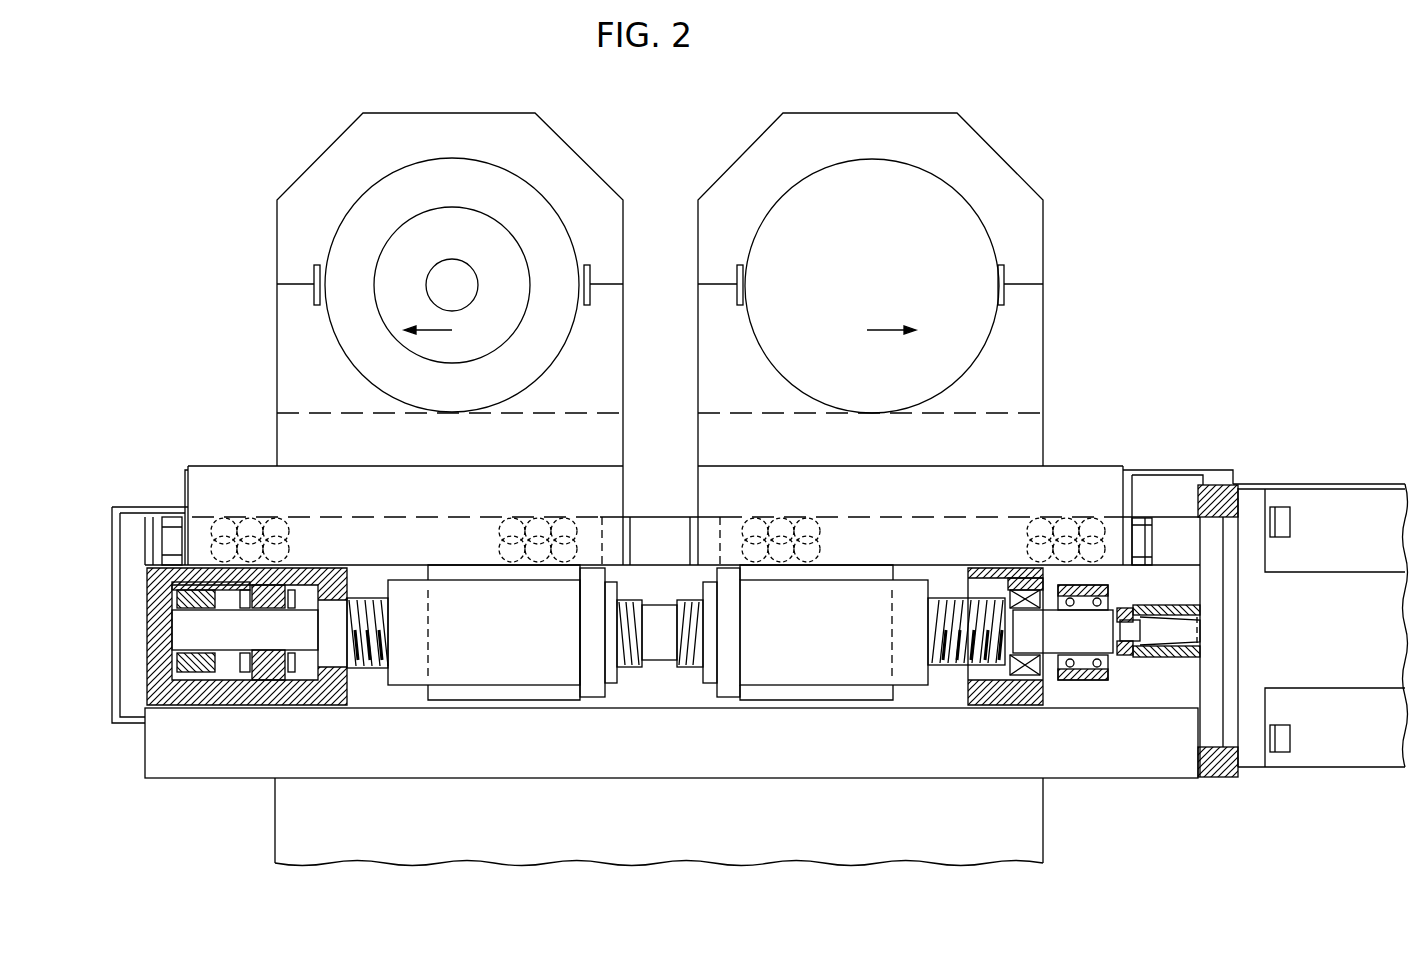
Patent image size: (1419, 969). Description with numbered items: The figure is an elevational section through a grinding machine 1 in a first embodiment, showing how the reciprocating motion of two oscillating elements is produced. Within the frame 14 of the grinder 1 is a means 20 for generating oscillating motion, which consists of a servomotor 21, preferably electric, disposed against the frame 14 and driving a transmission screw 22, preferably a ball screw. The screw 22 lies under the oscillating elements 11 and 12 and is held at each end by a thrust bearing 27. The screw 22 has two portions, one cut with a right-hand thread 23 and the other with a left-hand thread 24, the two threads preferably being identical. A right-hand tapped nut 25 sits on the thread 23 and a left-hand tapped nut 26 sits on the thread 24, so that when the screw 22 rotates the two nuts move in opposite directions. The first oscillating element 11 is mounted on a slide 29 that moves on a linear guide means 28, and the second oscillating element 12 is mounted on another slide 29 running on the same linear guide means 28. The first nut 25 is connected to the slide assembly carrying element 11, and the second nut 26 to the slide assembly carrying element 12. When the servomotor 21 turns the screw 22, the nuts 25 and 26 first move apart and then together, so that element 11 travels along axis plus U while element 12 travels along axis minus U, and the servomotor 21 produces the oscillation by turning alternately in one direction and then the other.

The grinding machine 1 is at (1015, 810).
The first oscillating element 11 is at (854, 148).
The second oscillating element 12 is at (431, 148).
The frame 14 is at (325, 822).
The means for generating oscillating motion 20 is at (1205, 688).
The servomotor 21 is at (1326, 643).
The transmission screw 22 is at (660, 642).
The right-hand thread 23 is at (948, 665).
The left-hand thread 24 is at (372, 670).
The right-hand tapped nut 25 is at (804, 670).
The left-hand tapped nut 26 is at (468, 670).
The thrust bearing 27 is at (262, 690).
The linear guide means 28 is at (1003, 533).
The slide 29 is at (256, 506).